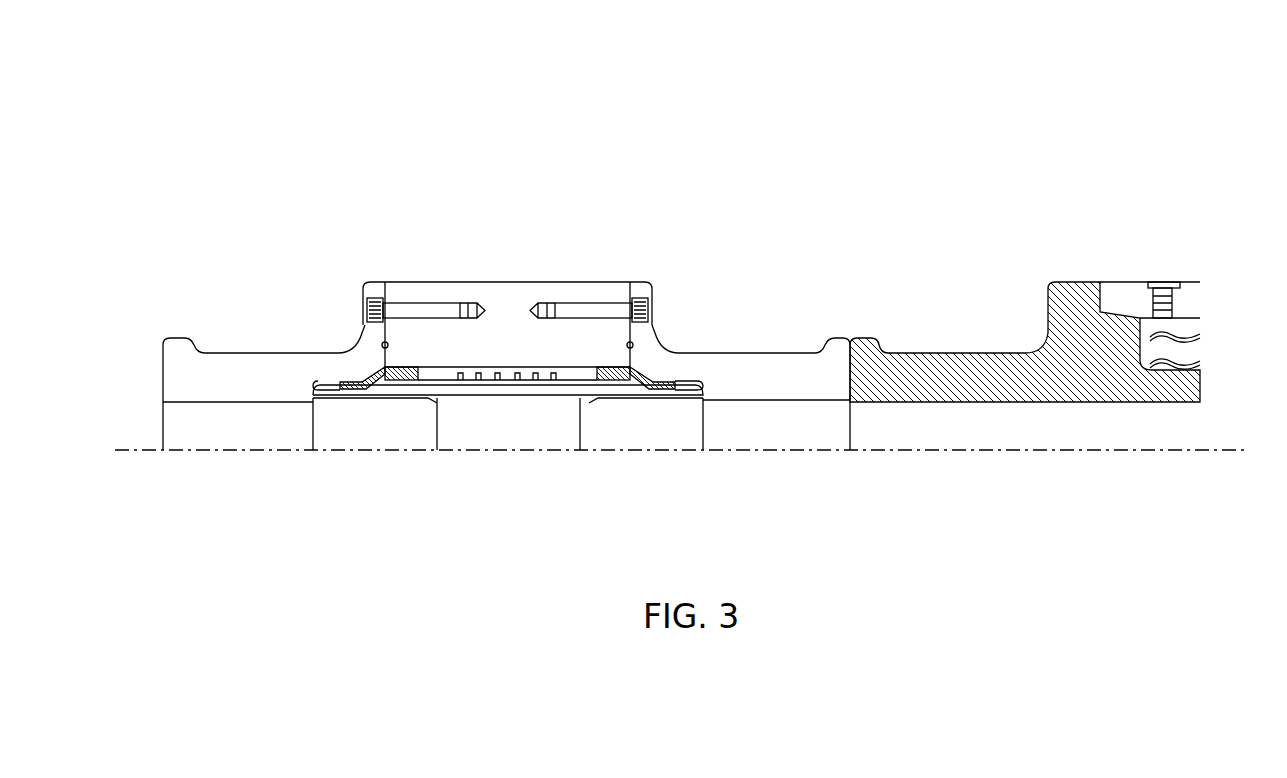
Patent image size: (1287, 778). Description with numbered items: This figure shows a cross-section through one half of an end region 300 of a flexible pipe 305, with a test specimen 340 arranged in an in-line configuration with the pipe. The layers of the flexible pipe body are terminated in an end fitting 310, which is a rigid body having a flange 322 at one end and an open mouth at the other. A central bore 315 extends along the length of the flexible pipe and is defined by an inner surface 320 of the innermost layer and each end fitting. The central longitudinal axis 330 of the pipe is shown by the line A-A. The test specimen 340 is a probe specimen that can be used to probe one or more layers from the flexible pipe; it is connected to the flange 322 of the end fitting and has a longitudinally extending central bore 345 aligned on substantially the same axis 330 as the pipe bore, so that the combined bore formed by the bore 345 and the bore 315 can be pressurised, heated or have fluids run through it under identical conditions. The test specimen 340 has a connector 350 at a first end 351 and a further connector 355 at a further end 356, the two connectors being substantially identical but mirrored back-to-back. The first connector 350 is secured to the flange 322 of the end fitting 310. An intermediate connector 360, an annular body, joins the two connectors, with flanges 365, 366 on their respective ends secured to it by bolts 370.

The end region 300 is at (950, 280).
The flexible pipe 305 is at (1098, 190).
The end fitting 310 is at (1050, 302).
The central bore 315 is at (1046, 440).
The inner surface 320 is at (1160, 405).
The flange 322 is at (888, 363).
The central longitudinal axis 330 is at (930, 452).
The test specimen 340 is at (535, 105).
The central bore 345 is at (526, 440).
The connector 350 is at (773, 368).
The first end 351 is at (727, 225).
The further connector 355 is at (258, 362).
The further end 356 is at (278, 212).
The intermediate connector 360 is at (513, 295).
The flange 365 is at (645, 355).
The flange 366 is at (370, 350).
The bolts 370 is at (423, 305).